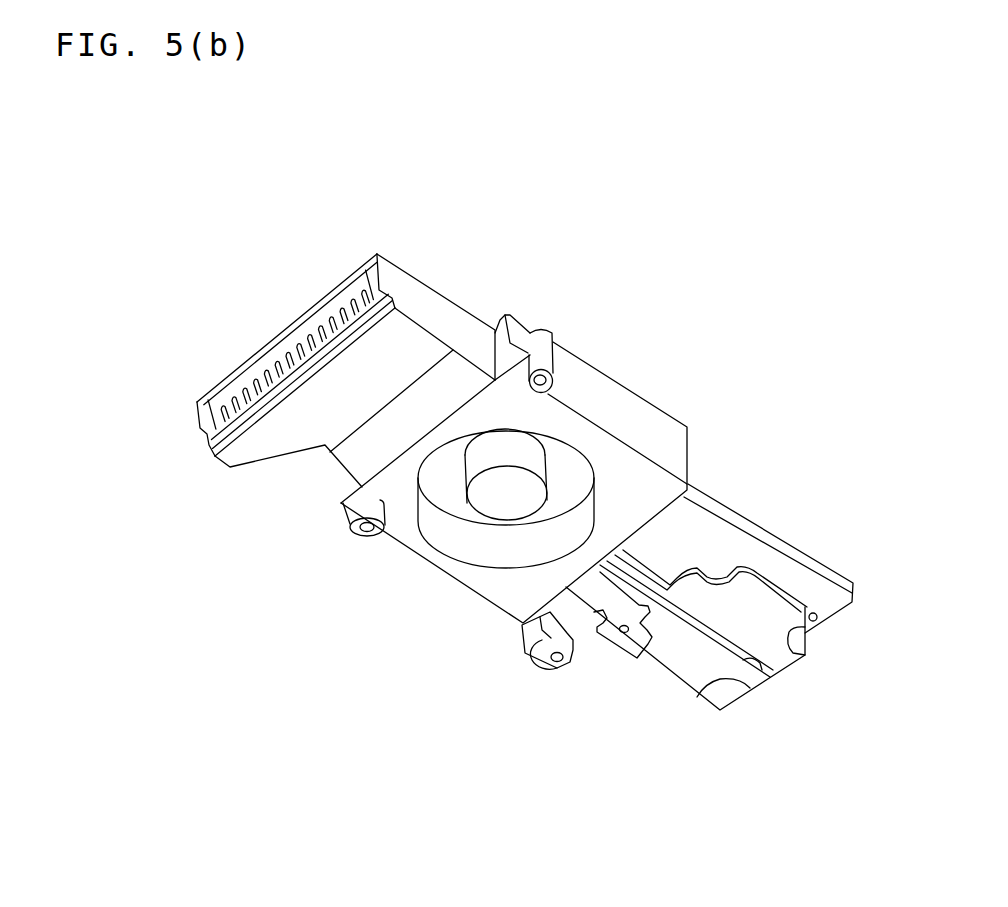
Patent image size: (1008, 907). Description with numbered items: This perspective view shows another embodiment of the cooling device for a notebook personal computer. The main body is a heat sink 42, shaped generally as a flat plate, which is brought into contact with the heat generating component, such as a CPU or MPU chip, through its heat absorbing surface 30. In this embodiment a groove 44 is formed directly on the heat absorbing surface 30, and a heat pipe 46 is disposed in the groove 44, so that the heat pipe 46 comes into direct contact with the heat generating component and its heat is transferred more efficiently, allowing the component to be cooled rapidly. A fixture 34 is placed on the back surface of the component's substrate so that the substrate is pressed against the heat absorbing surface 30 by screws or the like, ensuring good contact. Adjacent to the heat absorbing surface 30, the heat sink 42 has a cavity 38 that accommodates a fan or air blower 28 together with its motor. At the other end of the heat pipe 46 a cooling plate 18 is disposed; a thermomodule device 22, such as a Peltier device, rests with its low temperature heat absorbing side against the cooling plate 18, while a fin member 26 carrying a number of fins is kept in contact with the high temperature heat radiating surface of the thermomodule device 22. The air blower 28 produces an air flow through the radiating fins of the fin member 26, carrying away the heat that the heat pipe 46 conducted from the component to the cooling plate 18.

The cooling plate 18 is at (280, 334).
The thermomodule device 22 is at (337, 297).
The fin member 26 is at (280, 363).
The heat sink 42 is at (687, 420).
The cavity 38 is at (440, 490).
The air blower 28 is at (478, 533).
The fixture 34 is at (545, 653).
The heat absorbing surface 30 is at (777, 648).
The heat pipe 46 is at (700, 625).
The groove 44 is at (762, 670).